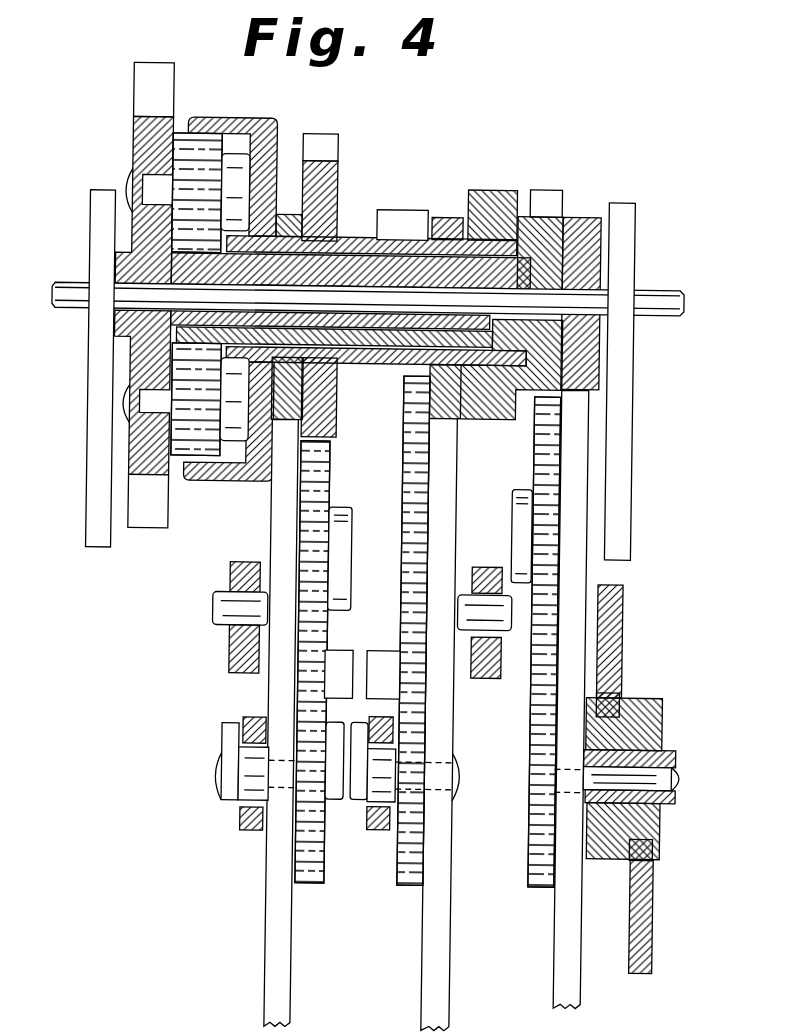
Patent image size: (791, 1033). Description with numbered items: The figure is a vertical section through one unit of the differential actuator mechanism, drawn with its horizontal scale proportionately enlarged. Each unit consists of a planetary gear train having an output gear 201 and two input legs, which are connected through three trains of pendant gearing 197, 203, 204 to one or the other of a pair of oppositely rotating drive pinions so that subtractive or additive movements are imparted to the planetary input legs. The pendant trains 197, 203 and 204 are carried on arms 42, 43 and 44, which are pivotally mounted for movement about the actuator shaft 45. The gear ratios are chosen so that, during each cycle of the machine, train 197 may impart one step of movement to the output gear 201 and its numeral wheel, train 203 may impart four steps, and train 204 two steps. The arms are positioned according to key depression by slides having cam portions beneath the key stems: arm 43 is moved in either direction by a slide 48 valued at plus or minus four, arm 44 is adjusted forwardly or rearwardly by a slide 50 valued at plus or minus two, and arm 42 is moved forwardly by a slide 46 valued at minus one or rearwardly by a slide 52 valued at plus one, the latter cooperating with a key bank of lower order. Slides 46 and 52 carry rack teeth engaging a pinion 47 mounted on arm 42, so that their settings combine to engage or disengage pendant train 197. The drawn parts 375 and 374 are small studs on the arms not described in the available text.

The output gear 201 is at (128, 97).
The actuator shaft 45 is at (46, 300).
The arm 44 is at (271, 986).
The arm 43 is at (428, 976).
The arm 42 is at (560, 964).
The pendant gear train 204 is at (314, 884).
The pendant gear train 203 is at (414, 881).
The pendant gear train 197 is at (541, 884).
The slide 50 is at (232, 663).
The slide 48 is at (475, 677).
The slide 46 is at (615, 609).
The pinion 47 is at (645, 699).
The slide 52 is at (653, 884).
The stud 375 is at (252, 825).
The stud 374 is at (382, 830).